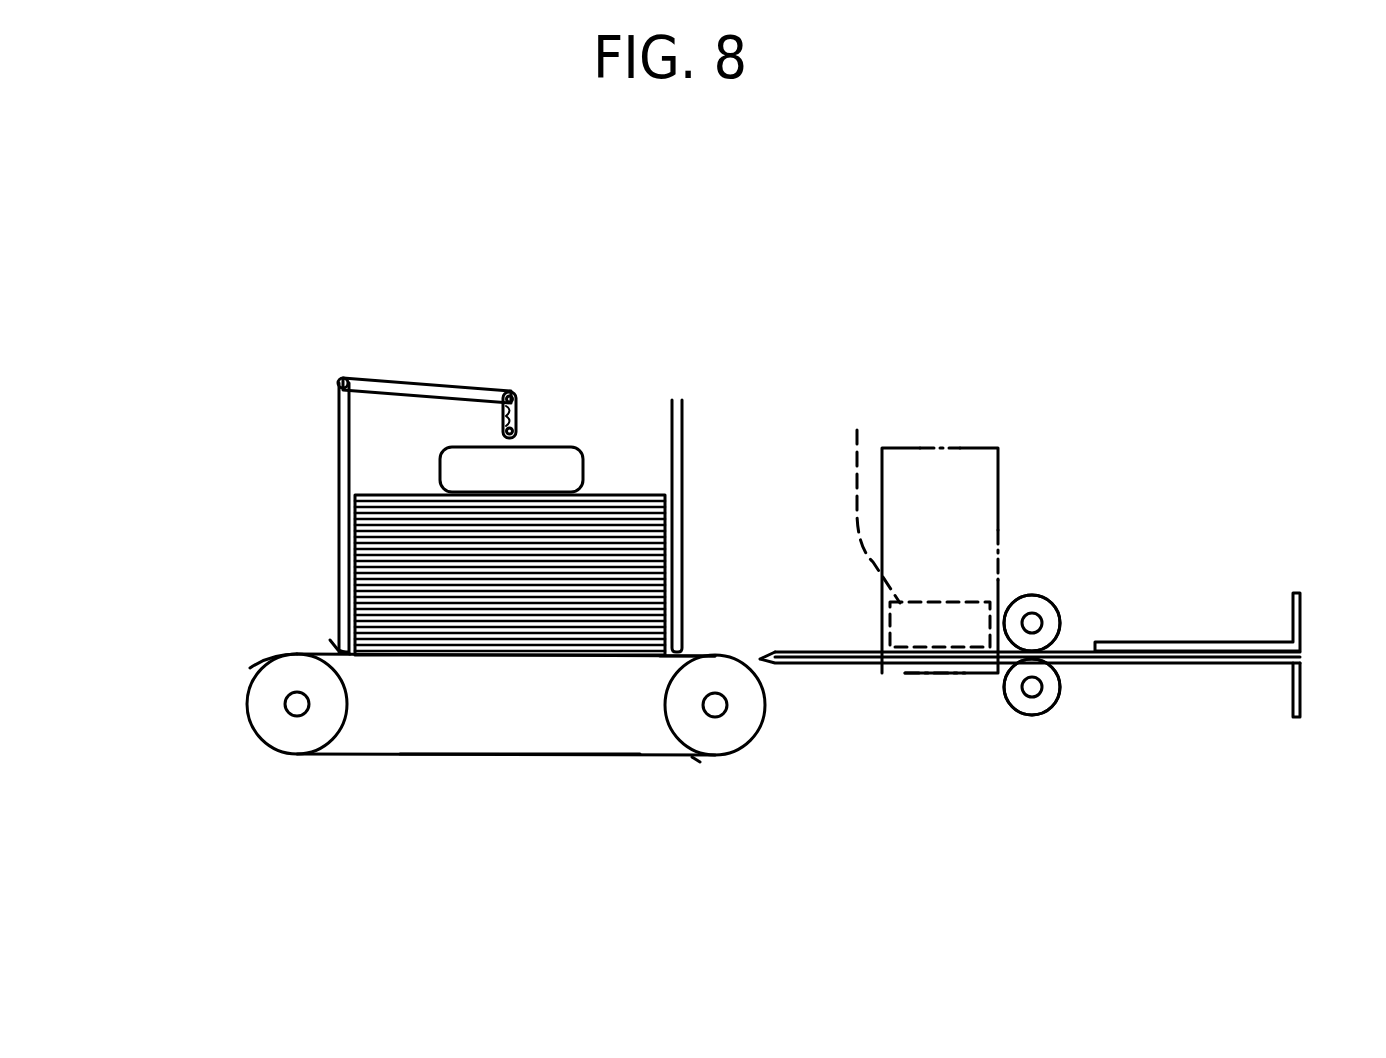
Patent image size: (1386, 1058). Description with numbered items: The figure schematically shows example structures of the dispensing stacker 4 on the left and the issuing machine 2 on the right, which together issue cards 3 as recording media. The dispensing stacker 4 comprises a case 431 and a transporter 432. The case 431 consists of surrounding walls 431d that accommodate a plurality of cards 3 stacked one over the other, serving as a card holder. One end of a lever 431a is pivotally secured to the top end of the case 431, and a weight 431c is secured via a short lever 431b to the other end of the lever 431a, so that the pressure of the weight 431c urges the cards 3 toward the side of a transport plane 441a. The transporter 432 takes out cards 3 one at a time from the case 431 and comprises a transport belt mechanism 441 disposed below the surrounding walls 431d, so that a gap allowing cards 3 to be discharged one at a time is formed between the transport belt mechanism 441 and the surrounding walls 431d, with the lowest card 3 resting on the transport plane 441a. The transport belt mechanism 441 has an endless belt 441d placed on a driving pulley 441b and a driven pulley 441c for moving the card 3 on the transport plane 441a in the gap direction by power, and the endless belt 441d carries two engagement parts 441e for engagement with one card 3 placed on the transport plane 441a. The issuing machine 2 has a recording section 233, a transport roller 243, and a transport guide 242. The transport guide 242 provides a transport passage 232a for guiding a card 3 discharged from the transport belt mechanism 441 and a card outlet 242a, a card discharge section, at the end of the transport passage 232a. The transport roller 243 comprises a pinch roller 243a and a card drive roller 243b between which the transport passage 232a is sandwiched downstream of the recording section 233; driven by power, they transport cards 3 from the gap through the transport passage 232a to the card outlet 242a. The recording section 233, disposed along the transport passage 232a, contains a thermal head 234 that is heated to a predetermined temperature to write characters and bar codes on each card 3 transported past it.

The issuing machine 2 is at (1047, 246).
The card 3 is at (403, 602).
The dispensing stacker 4 is at (402, 290).
The transport passage 232a is at (1143, 665).
The recording section 233 is at (968, 448).
The thermal head 234 is at (860, 492).
The transport guide 242 is at (1237, 670).
The card outlet 242a is at (1303, 663).
The transport roller 243 is at (1029, 598).
The pinch roller 243a is at (1043, 607).
The card drive roller 243b is at (1030, 716).
The case 431 is at (338, 422).
The lever 431a is at (422, 388).
The short lever 431b is at (565, 385).
The weight 431c is at (573, 443).
The surrounding walls 431d is at (684, 457).
The transporter 432 is at (273, 653).
The transport belt mechanism 441 is at (615, 757).
The transport plane 441a is at (688, 653).
The driving pulley 441b is at (292, 727).
The driven pulley 441c is at (727, 732).
The endless belt 441d is at (517, 757).
The engagement part 441e is at (338, 650).